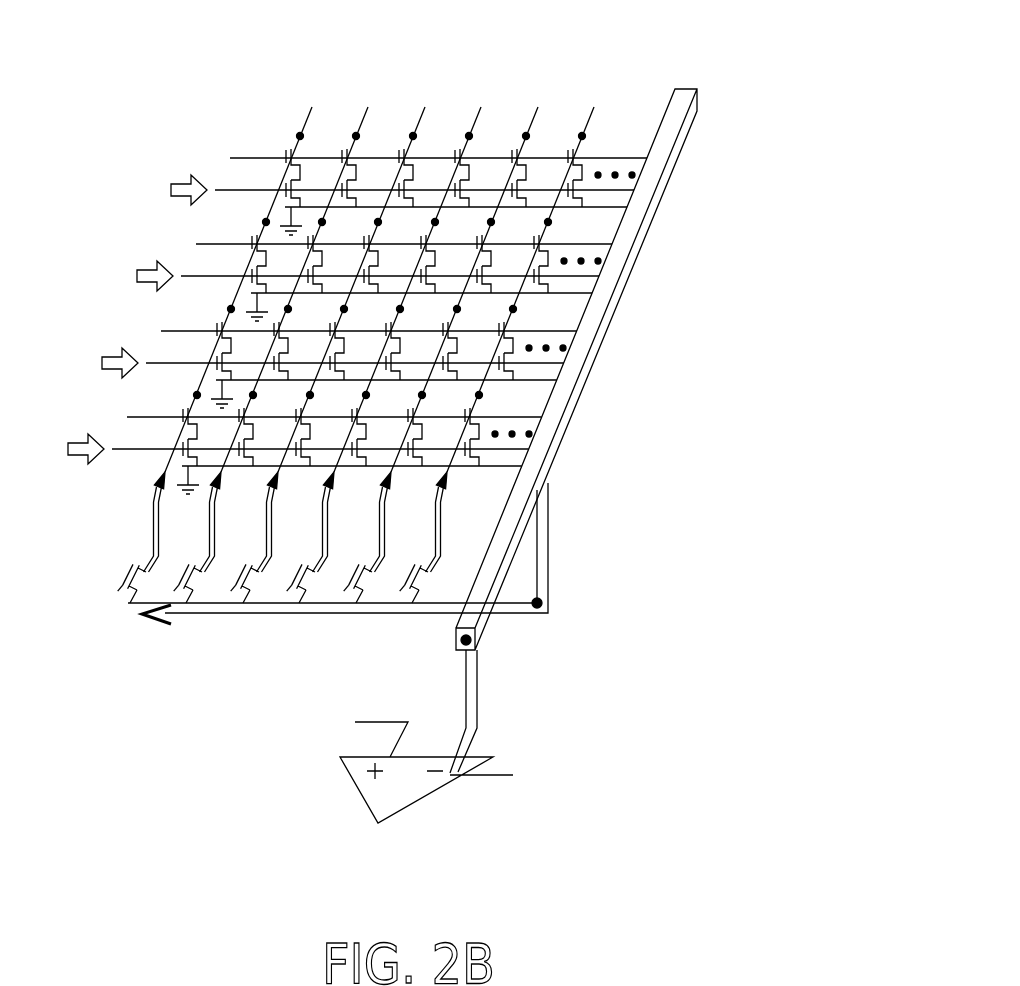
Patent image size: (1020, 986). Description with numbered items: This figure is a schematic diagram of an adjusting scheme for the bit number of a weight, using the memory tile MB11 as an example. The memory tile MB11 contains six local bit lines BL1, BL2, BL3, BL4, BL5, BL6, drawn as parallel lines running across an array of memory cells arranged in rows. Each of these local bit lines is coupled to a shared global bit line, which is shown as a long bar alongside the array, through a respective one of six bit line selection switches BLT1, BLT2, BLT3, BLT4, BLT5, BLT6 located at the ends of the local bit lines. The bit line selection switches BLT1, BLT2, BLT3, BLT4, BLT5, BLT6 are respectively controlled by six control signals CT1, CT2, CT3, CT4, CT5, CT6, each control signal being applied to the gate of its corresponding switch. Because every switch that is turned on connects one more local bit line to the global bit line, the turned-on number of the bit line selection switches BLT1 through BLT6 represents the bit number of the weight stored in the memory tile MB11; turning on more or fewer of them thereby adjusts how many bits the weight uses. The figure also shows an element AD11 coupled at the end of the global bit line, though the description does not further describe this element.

The memory tile MB11 is at (399, 430).
The local bit line BL1 is at (249, 270).
The local bit line BL2 is at (305, 270).
The local bit line BL3 is at (362, 270).
The local bit line BL4 is at (418, 270).
The local bit line BL5 is at (475, 270).
The local bit line BL6 is at (531, 270).
The control signal CT1 is at (126, 537).
The control signal CT2 is at (193, 537).
The control signal CT3 is at (250, 537).
The control signal CT4 is at (307, 537).
The control signal CT5 is at (364, 537).
The control signal CT6 is at (420, 537).
The bit line selection switch BLT1 is at (123, 585).
The bit line selection switch BLT2 is at (179, 585).
The bit line selection switch BLT3 is at (236, 585).
The bit line selection switch BLT4 is at (292, 585).
The bit line selection switch BLT5 is at (349, 585).
The bit line selection switch BLT6 is at (405, 585).
The amplifier / sense amplifier AD11 is at (426, 748).